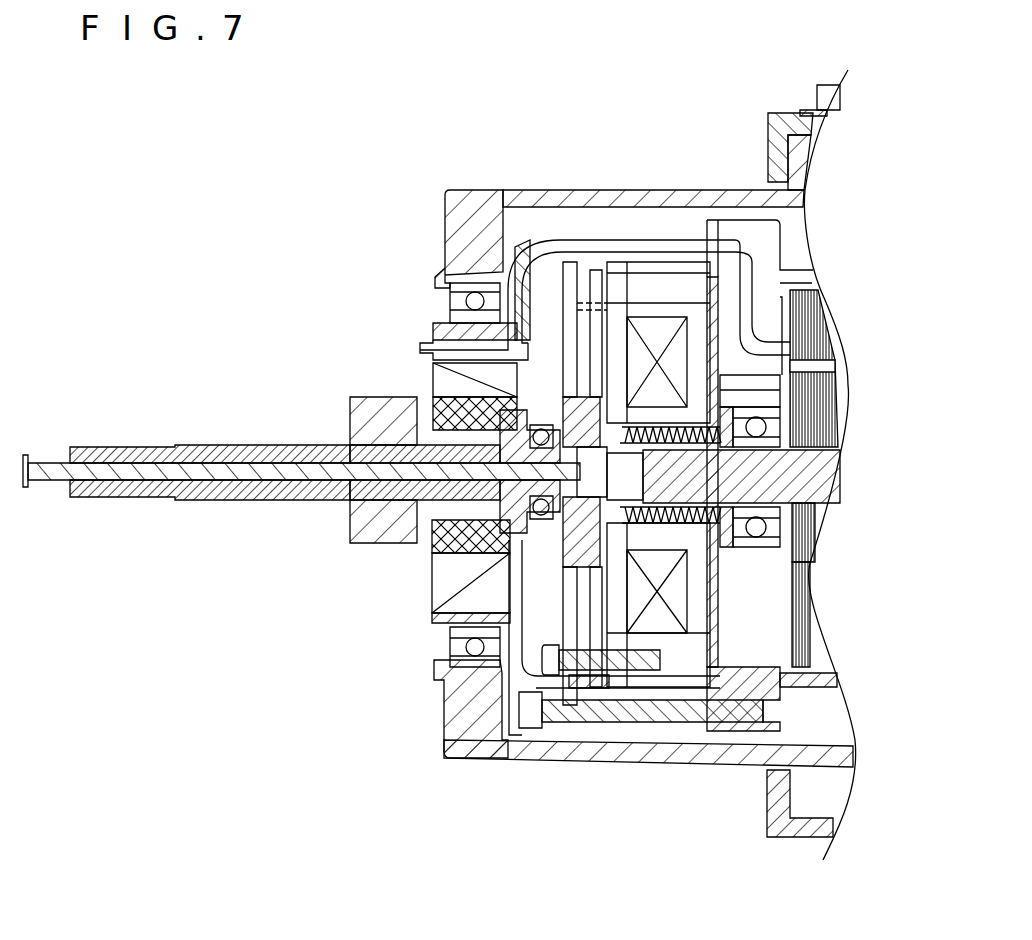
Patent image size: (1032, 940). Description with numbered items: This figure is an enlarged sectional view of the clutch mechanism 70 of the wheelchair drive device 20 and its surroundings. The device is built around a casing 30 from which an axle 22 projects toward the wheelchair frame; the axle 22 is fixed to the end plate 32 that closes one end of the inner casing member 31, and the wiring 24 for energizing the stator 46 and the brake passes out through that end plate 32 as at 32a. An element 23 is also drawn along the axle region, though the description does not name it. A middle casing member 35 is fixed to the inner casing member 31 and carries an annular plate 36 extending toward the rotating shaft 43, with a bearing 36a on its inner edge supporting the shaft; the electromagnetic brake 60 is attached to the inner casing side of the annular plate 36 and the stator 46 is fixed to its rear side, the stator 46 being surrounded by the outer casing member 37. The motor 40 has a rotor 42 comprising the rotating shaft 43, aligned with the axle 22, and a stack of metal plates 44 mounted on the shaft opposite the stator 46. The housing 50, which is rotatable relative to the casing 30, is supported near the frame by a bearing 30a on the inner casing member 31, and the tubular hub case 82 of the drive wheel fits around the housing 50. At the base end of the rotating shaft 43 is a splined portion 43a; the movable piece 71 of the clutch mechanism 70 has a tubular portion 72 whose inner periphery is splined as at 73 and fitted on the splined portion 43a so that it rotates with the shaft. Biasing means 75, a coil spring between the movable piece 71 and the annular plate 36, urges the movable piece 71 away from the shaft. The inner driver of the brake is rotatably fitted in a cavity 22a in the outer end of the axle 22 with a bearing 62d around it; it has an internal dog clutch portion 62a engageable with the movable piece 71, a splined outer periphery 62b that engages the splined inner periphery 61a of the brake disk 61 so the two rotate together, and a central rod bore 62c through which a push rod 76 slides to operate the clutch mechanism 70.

The drive device 20 is at (727, 93).
The axle 22 is at (215, 500).
The cavity 22a is at (433, 532).
The inner cable 23 is at (278, 482).
The wiring 24 is at (621, 240).
The casing 30 is at (667, 500).
The bearing 30a is at (473, 668).
The inner casing member 31 is at (648, 690).
The end plate 32 is at (500, 245).
The wiring passage 32a is at (430, 345).
The middle casing member 35 is at (764, 724).
The annular plate 36 is at (712, 300).
The bearing 36a is at (770, 405).
The outer casing member 37 is at (826, 688).
The motor 40 is at (775, 590).
The rotor 42 is at (764, 504).
The rotating shaft 43 is at (790, 487).
The splined portion 43a is at (800, 453).
The stack of metal plates 44 is at (815, 520).
The stator 46 is at (820, 328).
The housing 50 is at (840, 758).
The electromagnetic brake 60 is at (653, 268).
The brake disk 61 is at (586, 262).
The splined inner periphery 61a is at (510, 372).
The dog clutch portion 62a is at (594, 690).
The splined outer peripheral portion 62b is at (555, 394).
The rod bore 62c is at (445, 575).
The bearing 62d is at (480, 600).
The clutch mechanism 70 is at (740, 358).
The movable piece 71 is at (725, 437).
The tubular portion 72 is at (708, 580).
The splined inner periphery 73 is at (760, 420).
The biasing means 75 is at (762, 548).
The push rod 76 is at (102, 482).
The hub case 82 is at (835, 828).